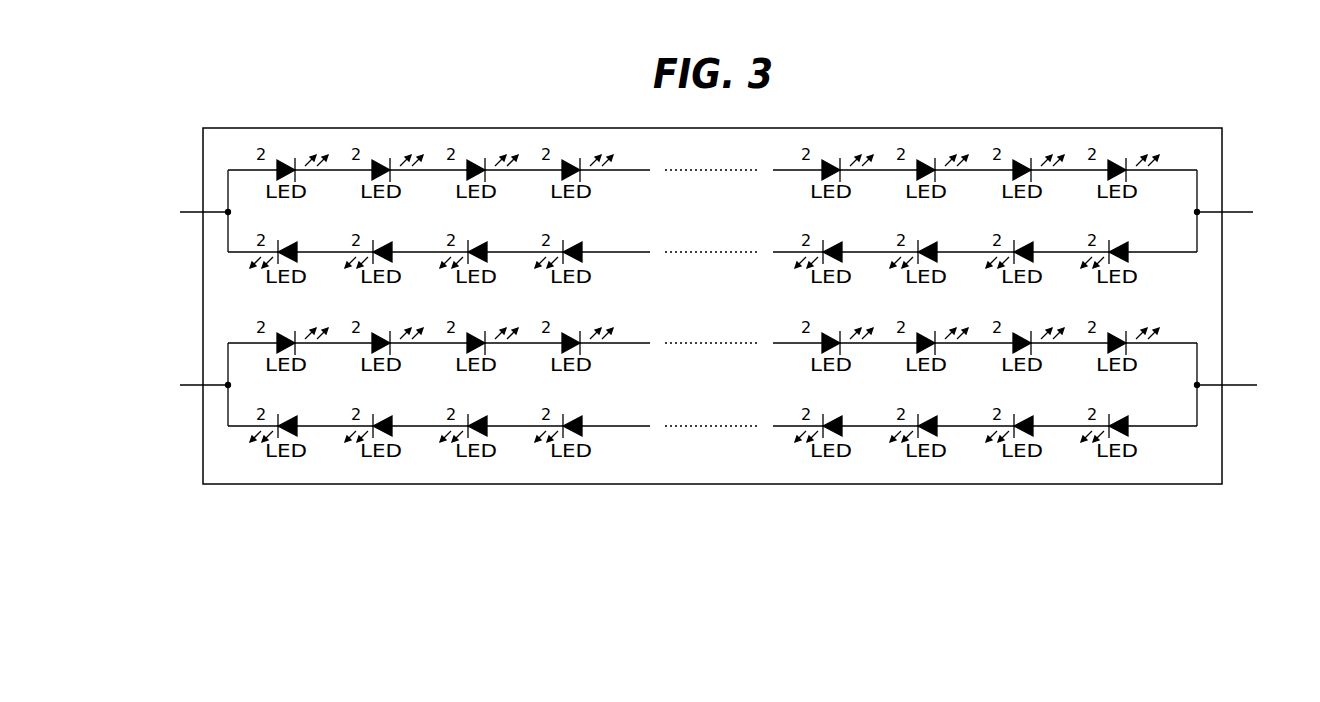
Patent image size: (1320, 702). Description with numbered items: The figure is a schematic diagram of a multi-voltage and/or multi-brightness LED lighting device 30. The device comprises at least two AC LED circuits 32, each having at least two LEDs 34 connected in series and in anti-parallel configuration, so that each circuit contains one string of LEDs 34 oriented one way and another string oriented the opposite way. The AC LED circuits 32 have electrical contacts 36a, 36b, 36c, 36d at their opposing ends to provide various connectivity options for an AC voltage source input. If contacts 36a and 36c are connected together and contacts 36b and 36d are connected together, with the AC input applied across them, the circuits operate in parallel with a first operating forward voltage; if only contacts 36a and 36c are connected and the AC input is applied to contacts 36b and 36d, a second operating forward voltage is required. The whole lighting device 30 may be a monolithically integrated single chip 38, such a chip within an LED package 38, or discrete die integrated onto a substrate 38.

The multi-voltage and/or multi-brightness LED lighting device 30 is at (296, 104).
The AC LED circuit 32 is at (1202, 190).
The LED 34 is at (1112, 160).
The electrical contact 36a is at (180, 212).
The electrical contact 36b is at (1253, 212).
The electrical contact 36c is at (180, 385).
The electrical contact 36d is at (1257, 385).
The monolithically integrated single chip 38 is at (1152, 487).